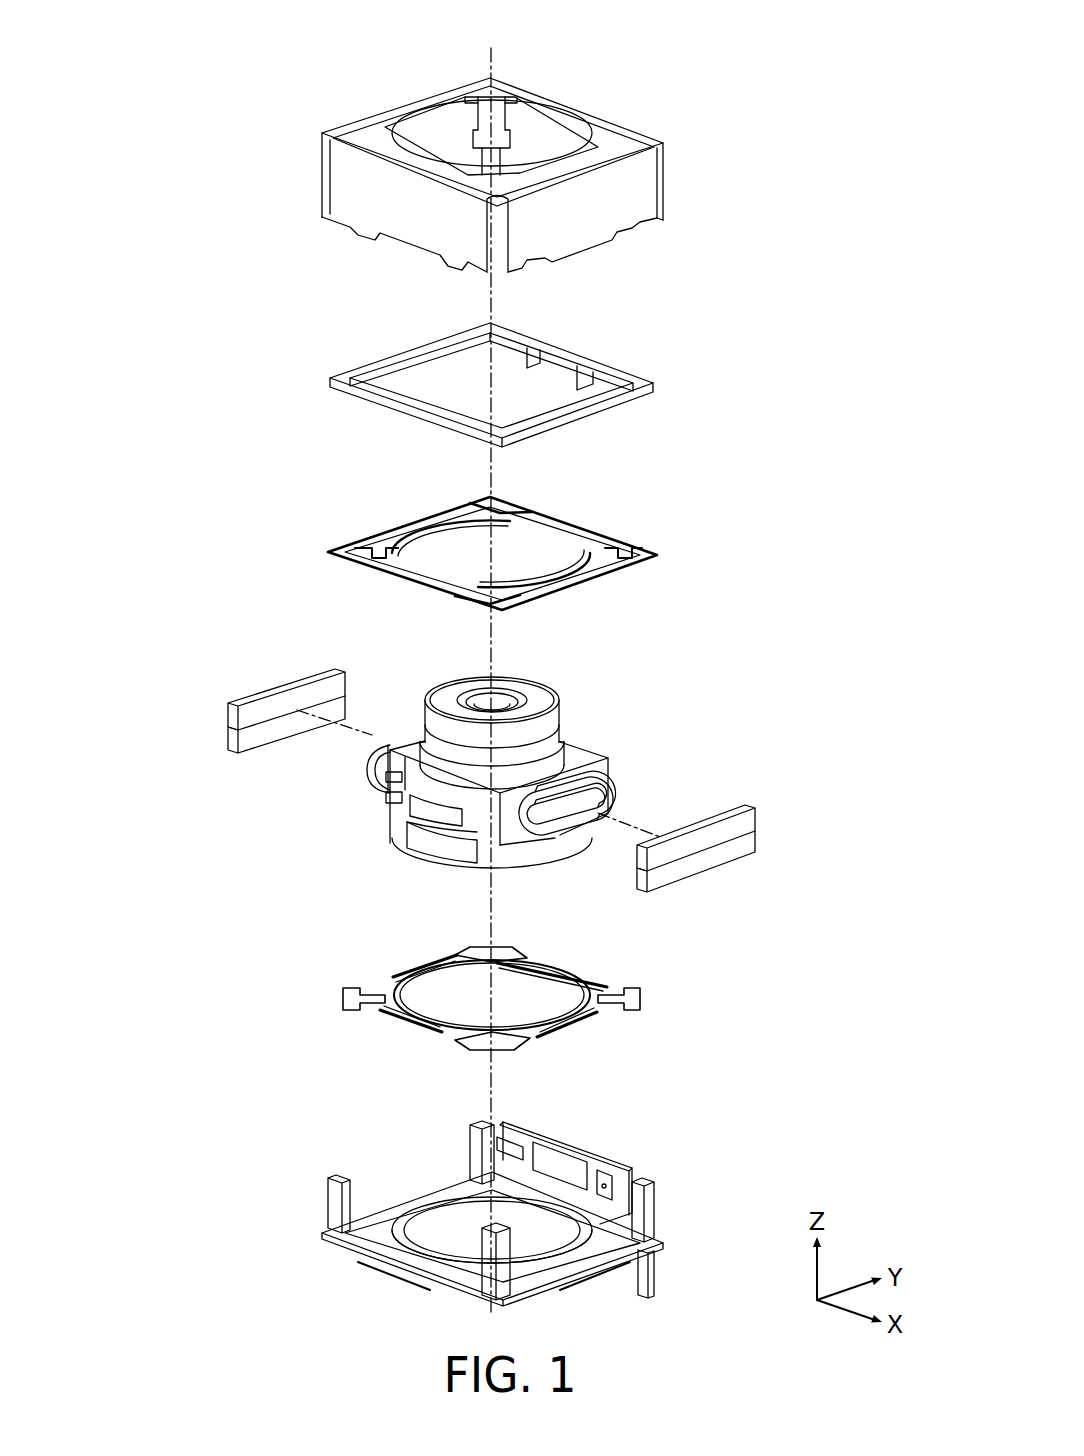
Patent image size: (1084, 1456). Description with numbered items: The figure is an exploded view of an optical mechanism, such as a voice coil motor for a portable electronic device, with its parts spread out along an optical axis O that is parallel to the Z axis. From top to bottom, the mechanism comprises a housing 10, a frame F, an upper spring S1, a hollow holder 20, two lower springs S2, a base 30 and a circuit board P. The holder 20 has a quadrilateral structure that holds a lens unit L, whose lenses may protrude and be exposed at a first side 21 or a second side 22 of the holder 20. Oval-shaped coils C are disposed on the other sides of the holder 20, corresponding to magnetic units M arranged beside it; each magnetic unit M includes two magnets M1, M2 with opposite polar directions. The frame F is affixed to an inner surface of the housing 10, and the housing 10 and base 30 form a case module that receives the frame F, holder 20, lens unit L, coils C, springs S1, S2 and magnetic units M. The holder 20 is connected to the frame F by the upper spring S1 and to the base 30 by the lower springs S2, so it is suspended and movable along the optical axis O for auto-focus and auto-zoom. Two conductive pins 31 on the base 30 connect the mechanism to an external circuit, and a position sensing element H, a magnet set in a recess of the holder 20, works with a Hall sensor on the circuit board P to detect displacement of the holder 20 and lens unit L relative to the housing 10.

The optical axis O is at (491, 663).
The housing 10 is at (628, 137).
The frame F is at (640, 382).
The upper spring S1 is at (647, 555).
The hollow holder 20 is at (614, 745).
The second side 22 is at (608, 750).
The first side 21 is at (473, 818).
The lens unit L is at (420, 855).
The coil C is at (378, 778).
The position sensing element H is at (386, 798).
The magnetic unit M is at (142, 698).
The magnet M1 is at (228, 718).
The magnet M2 is at (228, 737).
The lower spring S2 is at (355, 988).
The base 30 is at (660, 1213).
The conductive pin 31 is at (480, 1223).
The circuit board P is at (620, 1160).